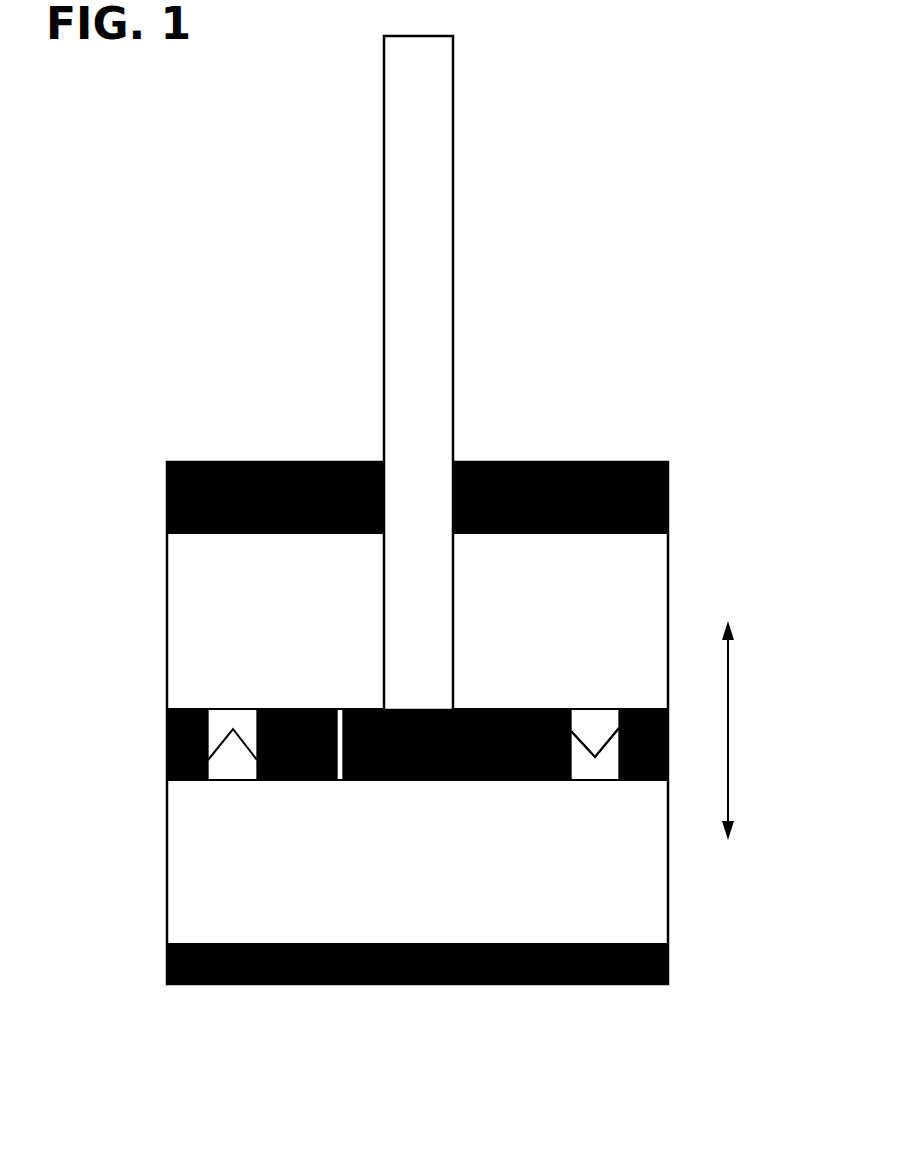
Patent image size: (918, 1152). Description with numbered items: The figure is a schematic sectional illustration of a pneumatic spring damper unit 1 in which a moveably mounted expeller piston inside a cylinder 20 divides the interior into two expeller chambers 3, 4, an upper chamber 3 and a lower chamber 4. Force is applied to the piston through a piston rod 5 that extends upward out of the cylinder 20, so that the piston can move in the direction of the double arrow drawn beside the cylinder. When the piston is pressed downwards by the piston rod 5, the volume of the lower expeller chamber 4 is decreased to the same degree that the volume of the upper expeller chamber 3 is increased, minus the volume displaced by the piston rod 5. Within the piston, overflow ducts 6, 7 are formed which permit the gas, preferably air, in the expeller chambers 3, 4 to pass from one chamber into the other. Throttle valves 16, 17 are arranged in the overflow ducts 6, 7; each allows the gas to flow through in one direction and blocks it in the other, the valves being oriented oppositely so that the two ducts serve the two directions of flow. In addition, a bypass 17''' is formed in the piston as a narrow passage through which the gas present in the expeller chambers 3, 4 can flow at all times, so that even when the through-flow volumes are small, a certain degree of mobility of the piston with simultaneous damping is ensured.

The pneumatic spring damper unit 1 is at (618, 311).
The expeller chamber 3 is at (639, 583).
The expeller chamber 4 is at (645, 906).
The piston rod 5 is at (423, 197).
The overflow duct 6 is at (218, 720).
The overflow duct 7 is at (599, 718).
The throttle valve 16 is at (208, 748).
The throttle valve 17 is at (585, 815).
The bypass 17''' is at (407, 799).
The cylinder 20 is at (167, 602).